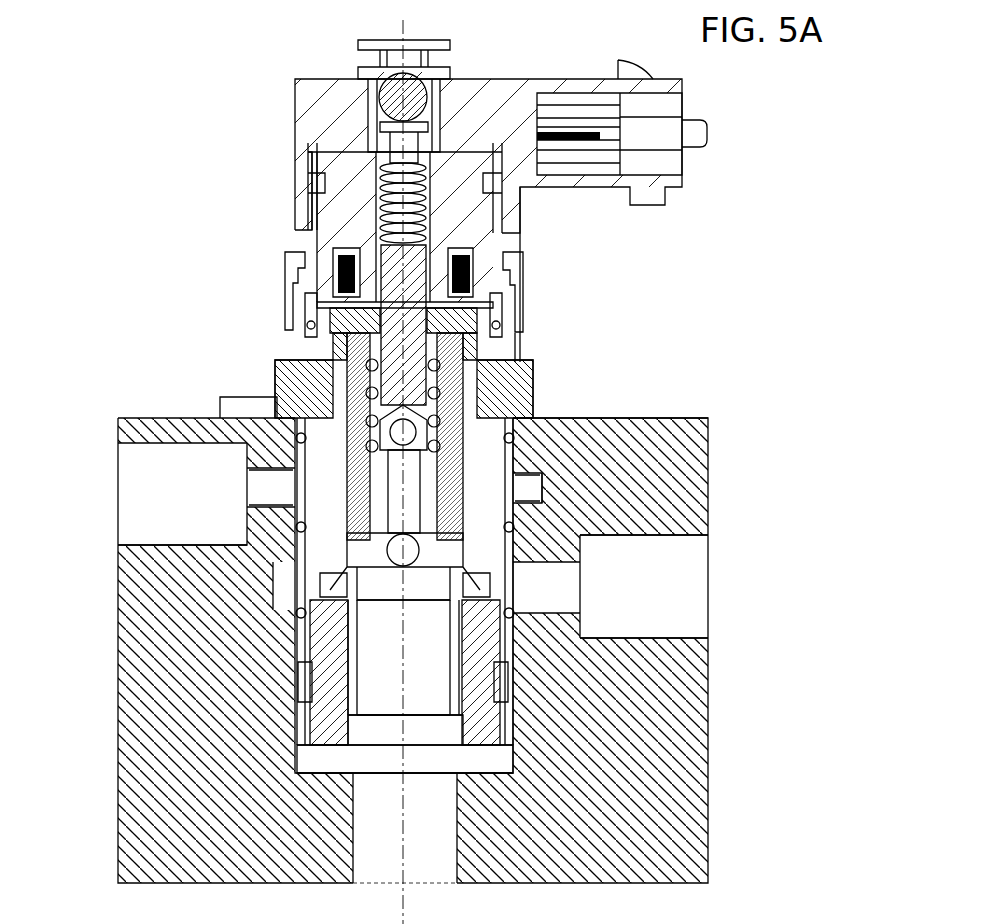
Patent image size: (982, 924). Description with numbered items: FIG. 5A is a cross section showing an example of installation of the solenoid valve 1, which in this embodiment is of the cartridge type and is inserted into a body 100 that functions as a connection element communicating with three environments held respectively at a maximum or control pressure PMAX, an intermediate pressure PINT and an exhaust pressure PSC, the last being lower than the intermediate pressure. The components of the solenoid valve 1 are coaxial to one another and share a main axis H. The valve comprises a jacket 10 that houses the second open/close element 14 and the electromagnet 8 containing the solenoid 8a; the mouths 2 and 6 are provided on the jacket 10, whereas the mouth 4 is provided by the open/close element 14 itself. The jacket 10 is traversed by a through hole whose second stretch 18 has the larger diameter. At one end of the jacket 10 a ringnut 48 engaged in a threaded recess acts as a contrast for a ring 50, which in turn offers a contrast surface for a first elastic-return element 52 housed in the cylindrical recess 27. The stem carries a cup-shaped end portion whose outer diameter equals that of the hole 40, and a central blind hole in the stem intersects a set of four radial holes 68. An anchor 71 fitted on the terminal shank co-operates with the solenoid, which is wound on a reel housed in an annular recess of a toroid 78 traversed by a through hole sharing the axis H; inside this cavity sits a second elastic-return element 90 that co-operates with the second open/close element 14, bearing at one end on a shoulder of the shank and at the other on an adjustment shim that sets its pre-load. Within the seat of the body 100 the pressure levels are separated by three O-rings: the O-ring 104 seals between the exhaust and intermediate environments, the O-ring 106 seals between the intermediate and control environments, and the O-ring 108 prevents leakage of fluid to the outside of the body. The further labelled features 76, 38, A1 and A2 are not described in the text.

The solenoid valve 1 is at (250, 110).
The second elastic-return element 90 is at (380, 232).
The main axis H is at (403, 62).
The electromagnet 8 is at (338, 219).
The toroid 78 is at (333, 230).
The solenoid 8a is at (503, 243).
The retaining clip 76 is at (287, 287).
The anchor 71 is at (523, 300).
The ringnut 48 is at (290, 337).
The ring 50 is at (290, 353).
The jacket 10 is at (537, 357).
The second open/close element 14 is at (275, 372).
The cylindrical recess 27 is at (470, 402).
The first elastic-return element 52 is at (513, 446).
The O-ring 108 is at (577, 447).
The body 100 is at (712, 442).
The mouth 2 is at (273, 483).
The bore cross section A2 is at (297, 490).
The bore cross section A1 is at (540, 506).
The second stretch 18 is at (243, 545).
The O-ring 106 is at (585, 540).
The mouth 6 is at (520, 588).
The O-ring 104 is at (557, 633).
The radial holes 68 is at (392, 598).
The hole 40 is at (427, 733).
The mouth 4 is at (393, 721).
The outlet bore 38 is at (342, 727).
The control pressure PMAX is at (132, 473).
The intermediate pressure PINT is at (697, 587).
The exhaust pressure PSC is at (430, 846).